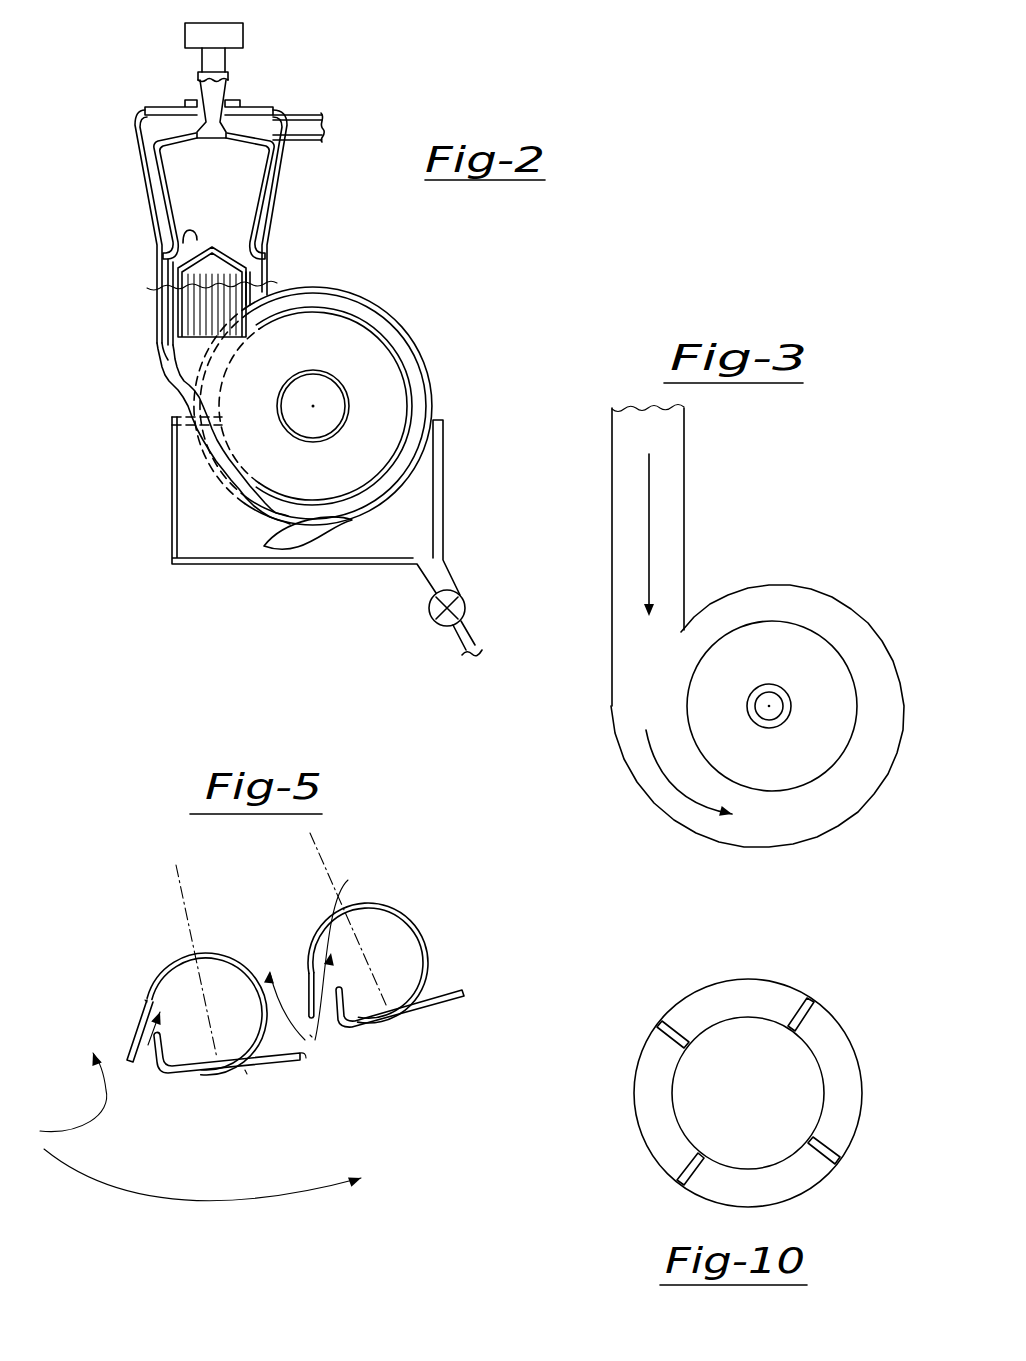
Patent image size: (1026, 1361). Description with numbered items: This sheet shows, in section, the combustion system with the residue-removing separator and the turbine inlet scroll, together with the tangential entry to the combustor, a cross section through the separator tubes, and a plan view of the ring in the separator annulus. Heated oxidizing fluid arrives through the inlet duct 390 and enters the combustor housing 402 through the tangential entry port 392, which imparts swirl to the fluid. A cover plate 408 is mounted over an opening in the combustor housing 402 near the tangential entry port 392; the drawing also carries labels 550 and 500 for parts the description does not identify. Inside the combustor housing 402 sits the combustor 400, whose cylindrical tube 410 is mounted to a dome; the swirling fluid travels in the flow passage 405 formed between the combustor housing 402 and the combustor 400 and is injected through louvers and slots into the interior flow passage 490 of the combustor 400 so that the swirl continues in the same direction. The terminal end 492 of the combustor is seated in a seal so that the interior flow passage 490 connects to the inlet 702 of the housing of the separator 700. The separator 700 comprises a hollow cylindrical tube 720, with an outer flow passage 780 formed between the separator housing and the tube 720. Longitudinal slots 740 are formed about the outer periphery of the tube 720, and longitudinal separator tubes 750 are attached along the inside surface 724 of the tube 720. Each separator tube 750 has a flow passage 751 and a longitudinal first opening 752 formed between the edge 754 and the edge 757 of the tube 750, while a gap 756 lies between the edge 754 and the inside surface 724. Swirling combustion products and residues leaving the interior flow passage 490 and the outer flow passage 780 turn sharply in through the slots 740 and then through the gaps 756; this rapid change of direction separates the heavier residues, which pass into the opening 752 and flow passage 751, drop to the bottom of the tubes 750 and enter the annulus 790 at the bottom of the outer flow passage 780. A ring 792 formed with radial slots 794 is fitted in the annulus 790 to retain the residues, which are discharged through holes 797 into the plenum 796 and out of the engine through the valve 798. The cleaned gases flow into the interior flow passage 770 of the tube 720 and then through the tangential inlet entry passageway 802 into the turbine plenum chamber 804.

In FIG. 2, the knob 550 is at (243, 38).
In FIG. 2, the nozzle 500 is at (228, 90).
In FIG. 2, the cover plate 408 is at (166, 66).
In FIG. 2, the tangential entry port 392 is at (320, 114).
In FIG. 3, the tangential entry port 392 is at (624, 670).
In FIG. 2, the inlet duct 390 is at (322, 128).
In FIG. 3, the inlet duct 390 is at (612, 505).
In FIG. 2, the combustor housing 402 is at (280, 160).
In FIG. 3, the combustor housing 402 is at (826, 551).
In FIG. 2, the flow passage 405 is at (158, 188).
In FIG. 2, the combustor 400 is at (270, 190).
In FIG. 2, the interior flow passage 490 is at (232, 213).
In FIG. 2, the inlet 702 is at (183, 233).
In FIG. 2, the terminal end 492 is at (262, 268).
In FIG. 2, the interior flow passage 770 is at (212, 292).
In FIG. 5, the interior flow passage 770 is at (304, 938).
In FIG. 2, the outer flow passage 780 is at (162, 317).
In FIG. 5, the outer flow passage 780 is at (208, 1202).
In FIG. 2, the separator 700 is at (277, 290).
In FIG. 2, the turbine plenum chamber 804 is at (378, 336).
In FIG. 2, the ring 792 is at (173, 347).
In FIG. 10, the ring 792 is at (772, 988).
In FIG. 2, the annulus 790 is at (170, 370).
In FIG. 2, the tangential inlet entry passageway 802 is at (222, 425).
In FIG. 2, the holes 797 is at (293, 530).
In FIG. 2, the plenum 796 is at (447, 567).
In FIG. 2, the valve 798 is at (465, 600).
In FIG. 3, the cylindrical tube 410 is at (792, 693).
In FIG. 5, the flow passage 751 is at (227, 975).
In FIG. 5, the edge 754 is at (122, 1065).
In FIG. 5, the longitudinal slots 740 is at (147, 1070).
In FIG. 5, the longitudinal separator tubes 750 is at (130, 1020).
In FIG. 5, the edge 757 is at (170, 1022).
In FIG. 5, the first opening 752 is at (144, 1058).
In FIG. 5, the inside surface 724 is at (480, 963).
In FIG. 5, the hollow cylindrical tube 720 is at (247, 1074).
In FIG. 5, the gap 756 is at (310, 1035).
In FIG. 10, the radial slots 794 is at (657, 1027).